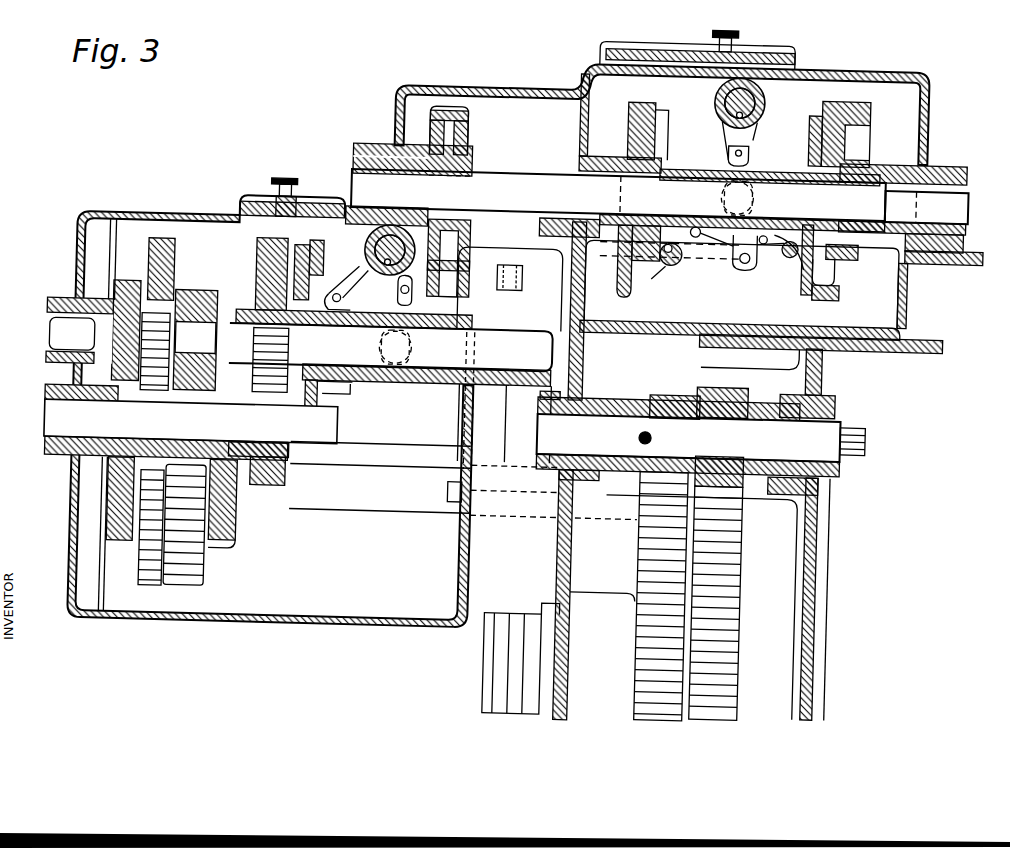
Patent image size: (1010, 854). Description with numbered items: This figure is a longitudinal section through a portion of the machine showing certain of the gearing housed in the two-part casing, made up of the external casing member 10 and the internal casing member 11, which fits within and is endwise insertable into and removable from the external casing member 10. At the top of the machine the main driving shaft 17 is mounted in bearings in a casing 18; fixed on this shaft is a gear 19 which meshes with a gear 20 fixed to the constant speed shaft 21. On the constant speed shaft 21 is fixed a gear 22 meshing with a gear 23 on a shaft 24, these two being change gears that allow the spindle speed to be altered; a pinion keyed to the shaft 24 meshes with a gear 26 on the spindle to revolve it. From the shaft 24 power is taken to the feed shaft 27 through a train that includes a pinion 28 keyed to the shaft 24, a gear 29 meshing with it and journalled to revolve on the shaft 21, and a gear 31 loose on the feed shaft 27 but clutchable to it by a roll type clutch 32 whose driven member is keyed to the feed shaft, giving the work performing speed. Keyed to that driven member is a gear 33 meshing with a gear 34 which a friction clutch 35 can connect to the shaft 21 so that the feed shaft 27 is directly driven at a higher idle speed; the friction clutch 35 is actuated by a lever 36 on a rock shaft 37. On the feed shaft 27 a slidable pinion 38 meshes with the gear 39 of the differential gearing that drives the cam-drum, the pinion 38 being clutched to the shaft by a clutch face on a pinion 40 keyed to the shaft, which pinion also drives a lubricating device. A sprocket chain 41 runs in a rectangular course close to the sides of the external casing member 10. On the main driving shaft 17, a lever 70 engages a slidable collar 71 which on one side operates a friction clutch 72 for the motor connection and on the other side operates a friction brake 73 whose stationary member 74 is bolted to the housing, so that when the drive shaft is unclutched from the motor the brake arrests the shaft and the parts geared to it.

The external casing member 10 is at (568, 282).
The internal casing member 11 is at (868, 339).
The main driving shaft 17 is at (657, 211).
The casing 18 is at (437, 82).
The gear 19 is at (456, 143).
The gear 20 is at (460, 300).
The constant speed shaft 21 is at (389, 397).
The gear 22 is at (166, 373).
The gear 23 is at (208, 580).
The shaft 24 is at (301, 557).
The gear 26 is at (644, 580).
The feed shaft 27 is at (701, 439).
The pinion 28 is at (154, 558).
The gear 29 is at (171, 276).
The gear 31 is at (108, 540).
The clutch 32 is at (238, 504).
The gear 33 is at (269, 485).
The gear 34 is at (253, 270).
The friction clutch 35 is at (313, 245).
The lever 36 is at (366, 276).
The rock shaft 37 is at (386, 228).
The pinion 38 is at (748, 385).
The gear 39 is at (746, 548).
The pinion 40 is at (660, 396).
The sprocket chain 41 is at (520, 278).
The lever 70 is at (750, 116).
The collar 71 is at (735, 248).
The friction clutch 72 is at (802, 130).
The friction brake 73 is at (684, 262).
The stationary member 74 is at (629, 130).